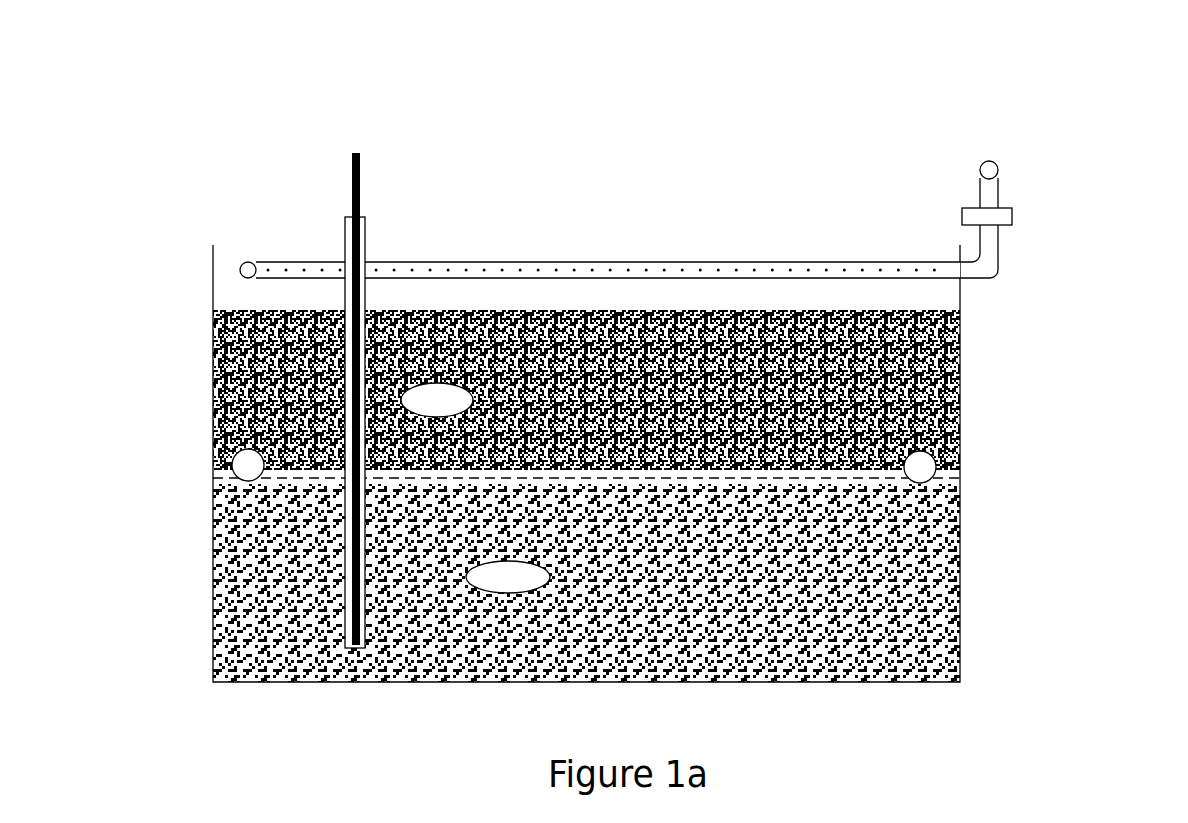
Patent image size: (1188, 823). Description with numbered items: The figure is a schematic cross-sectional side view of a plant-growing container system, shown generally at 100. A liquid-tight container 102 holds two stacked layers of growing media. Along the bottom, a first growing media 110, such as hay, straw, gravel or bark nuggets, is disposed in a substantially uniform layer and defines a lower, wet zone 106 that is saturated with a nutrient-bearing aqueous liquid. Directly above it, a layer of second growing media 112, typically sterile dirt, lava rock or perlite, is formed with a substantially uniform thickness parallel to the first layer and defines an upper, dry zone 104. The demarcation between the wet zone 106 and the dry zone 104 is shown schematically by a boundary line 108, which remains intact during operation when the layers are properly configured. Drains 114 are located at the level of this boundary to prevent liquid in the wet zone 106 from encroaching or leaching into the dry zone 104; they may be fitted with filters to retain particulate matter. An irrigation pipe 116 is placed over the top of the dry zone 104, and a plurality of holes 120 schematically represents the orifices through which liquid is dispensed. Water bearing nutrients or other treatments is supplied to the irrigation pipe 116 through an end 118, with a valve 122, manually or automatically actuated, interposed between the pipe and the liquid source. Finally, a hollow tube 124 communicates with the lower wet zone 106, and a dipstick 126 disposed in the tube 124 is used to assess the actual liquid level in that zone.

The container 100 is at (902, 125).
The liquid-tight container 102 is at (963, 297).
The upper, dry zone 104 is at (977, 315).
The lower, wet zone 106 is at (977, 485).
The boundary line 108 is at (945, 478).
The first growing media 110 is at (508, 577).
The second growing media 112 is at (437, 400).
The drain 114 is at (244, 463).
The irrigation pipe 116 is at (822, 262).
The end 118 is at (957, 258).
The holes 120 is at (627, 266).
The valve 122 is at (1012, 217).
The hollow tube 124 is at (345, 218).
The dipstick 126 is at (360, 170).